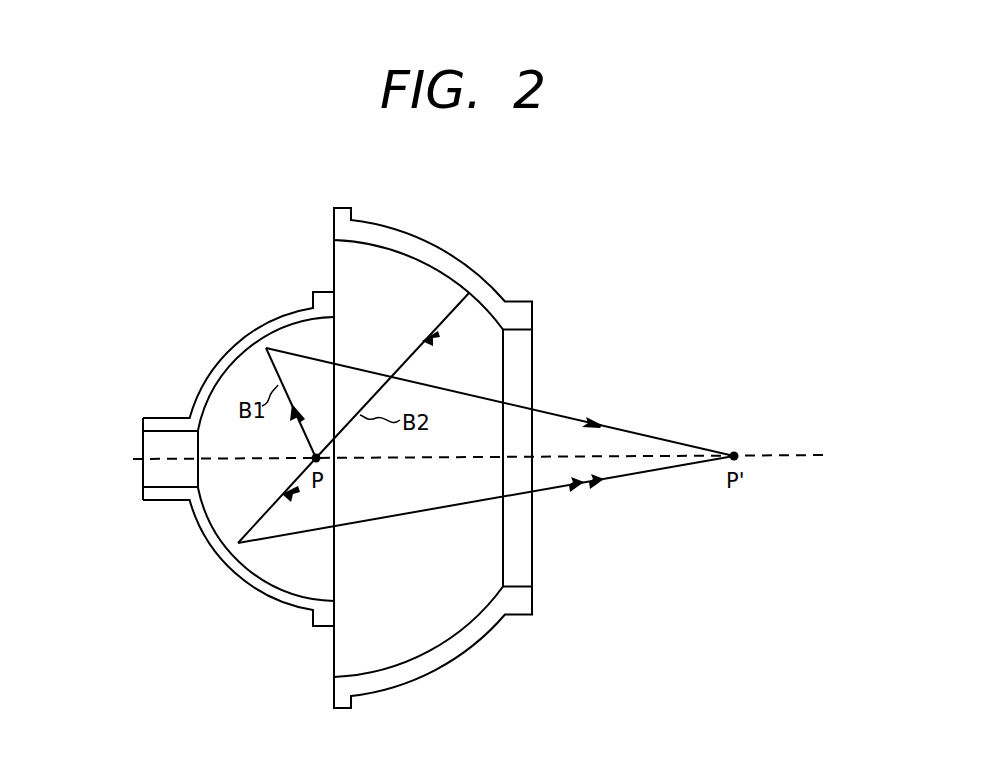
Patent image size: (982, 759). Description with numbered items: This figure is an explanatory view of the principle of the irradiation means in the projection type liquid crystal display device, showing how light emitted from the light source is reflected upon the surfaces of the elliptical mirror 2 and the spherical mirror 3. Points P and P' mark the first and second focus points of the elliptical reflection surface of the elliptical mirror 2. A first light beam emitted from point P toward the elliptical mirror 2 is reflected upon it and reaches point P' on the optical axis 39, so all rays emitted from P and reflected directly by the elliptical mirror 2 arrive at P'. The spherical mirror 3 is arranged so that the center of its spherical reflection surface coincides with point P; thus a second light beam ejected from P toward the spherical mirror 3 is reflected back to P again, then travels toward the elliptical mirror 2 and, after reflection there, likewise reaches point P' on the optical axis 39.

The elliptical mirror 2 is at (231, 359).
The spherical mirror 3 is at (437, 252).
The optical axis 39 is at (783, 453).